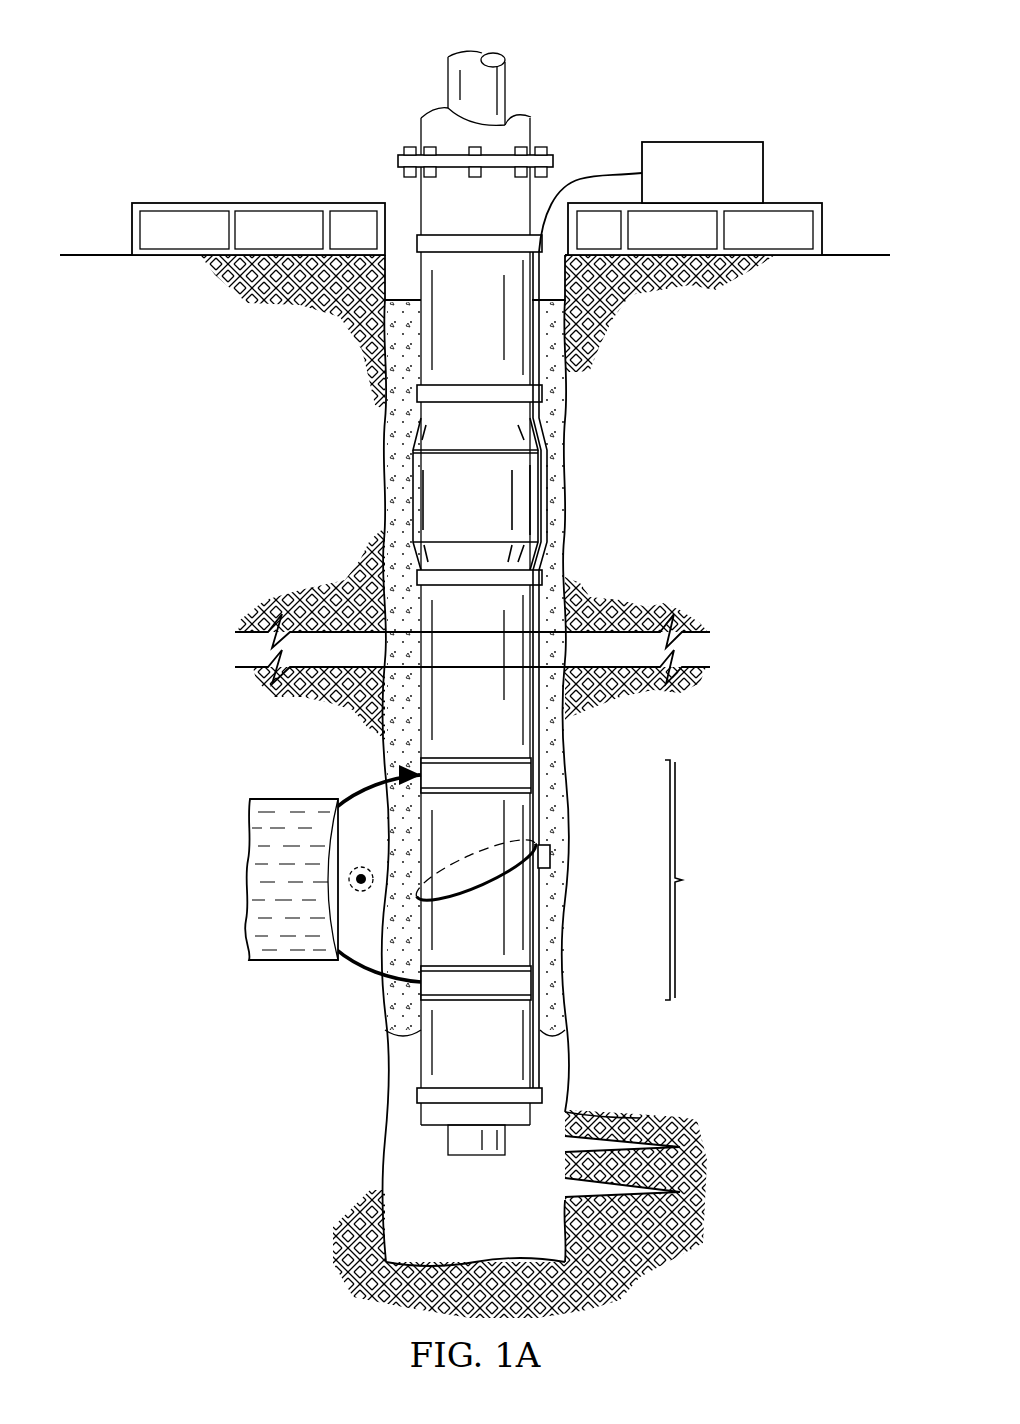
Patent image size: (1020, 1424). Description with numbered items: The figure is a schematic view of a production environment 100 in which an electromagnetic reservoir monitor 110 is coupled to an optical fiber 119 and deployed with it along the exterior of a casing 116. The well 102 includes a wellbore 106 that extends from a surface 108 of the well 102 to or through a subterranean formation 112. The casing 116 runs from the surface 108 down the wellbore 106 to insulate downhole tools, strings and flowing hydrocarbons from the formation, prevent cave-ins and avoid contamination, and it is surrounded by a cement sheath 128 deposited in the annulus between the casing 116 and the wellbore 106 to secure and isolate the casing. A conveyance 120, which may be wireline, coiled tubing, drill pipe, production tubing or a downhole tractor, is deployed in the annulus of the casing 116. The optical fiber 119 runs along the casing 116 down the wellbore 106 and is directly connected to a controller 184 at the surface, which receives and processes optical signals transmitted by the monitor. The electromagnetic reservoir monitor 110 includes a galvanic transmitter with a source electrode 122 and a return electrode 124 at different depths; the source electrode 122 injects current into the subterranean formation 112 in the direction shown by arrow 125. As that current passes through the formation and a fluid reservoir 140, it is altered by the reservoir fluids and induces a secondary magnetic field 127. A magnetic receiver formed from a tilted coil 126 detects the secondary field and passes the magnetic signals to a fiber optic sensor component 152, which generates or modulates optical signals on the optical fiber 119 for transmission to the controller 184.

The production environment 100 is at (247, 48).
The well 102 is at (350, 136).
The wellbore 106 is at (384, 1145).
The surface 108 is at (851, 255).
The electromagnetic reservoir monitor 110 is at (697, 880).
The subterranean formation 112 is at (292, 370).
The casing 116 is at (421, 197).
The optical fiber 119 is at (580, 178).
The conveyance 120 is at (449, 86).
The source electrode 122 is at (515, 776).
The return electrode 124 is at (515, 985).
The arrow 125 is at (345, 780).
The tilted coil 126 is at (480, 897).
The secondary magnetic field 127 is at (363, 891).
The cement sheath 128 is at (392, 496).
The fluid reservoir 140 is at (247, 905).
The fiber optic sensor component 152 is at (548, 856).
The controller 184 is at (712, 142).